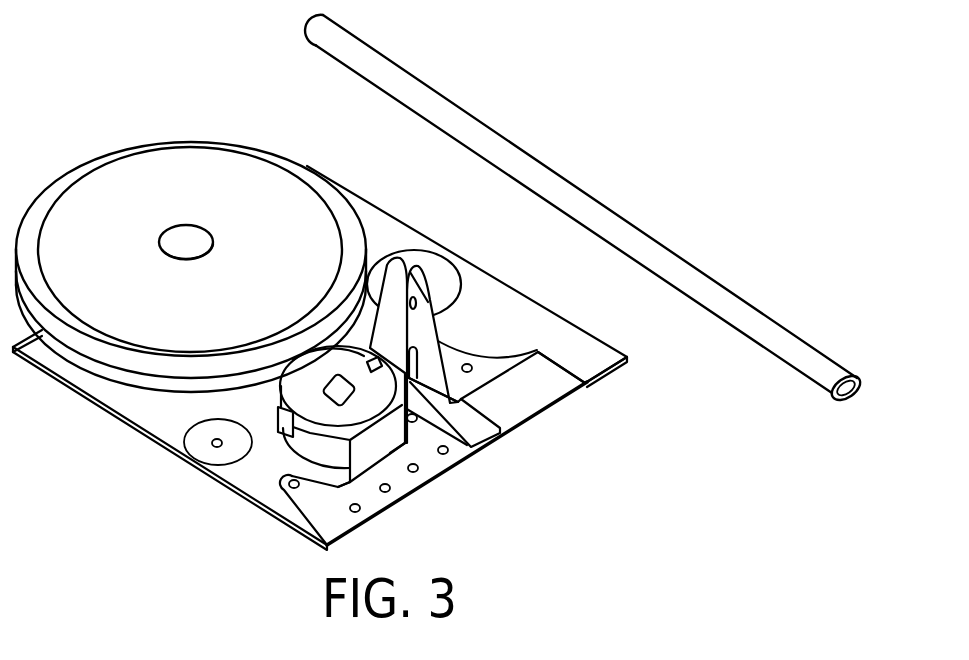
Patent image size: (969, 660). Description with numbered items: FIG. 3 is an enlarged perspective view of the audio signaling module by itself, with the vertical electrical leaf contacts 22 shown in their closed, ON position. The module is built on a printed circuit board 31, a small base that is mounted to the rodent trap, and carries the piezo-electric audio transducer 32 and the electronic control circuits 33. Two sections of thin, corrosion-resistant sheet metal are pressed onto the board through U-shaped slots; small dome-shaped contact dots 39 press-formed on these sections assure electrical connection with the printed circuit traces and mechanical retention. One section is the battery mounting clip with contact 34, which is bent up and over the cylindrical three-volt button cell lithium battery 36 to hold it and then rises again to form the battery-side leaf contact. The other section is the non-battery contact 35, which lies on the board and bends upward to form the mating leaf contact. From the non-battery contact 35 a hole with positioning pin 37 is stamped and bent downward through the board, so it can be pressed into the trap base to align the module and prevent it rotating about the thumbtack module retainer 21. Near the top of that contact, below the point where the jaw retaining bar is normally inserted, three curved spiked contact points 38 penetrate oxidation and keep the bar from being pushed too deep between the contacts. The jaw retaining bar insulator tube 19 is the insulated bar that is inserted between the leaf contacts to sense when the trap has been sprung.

The jaw retaining bar insulator tube 19 is at (798, 352).
The thumbtack module retainer 21 is at (207, 447).
The electrical leaf contacts 22 is at (395, 282).
The printed circuit board 31 is at (88, 402).
The piezo-electric audio transducer 32 is at (190, 178).
The electronic control circuits 33 is at (462, 278).
The battery mounting clip with contact 34 is at (322, 513).
The non-battery contact 35 is at (578, 370).
The 3V button cell lithium battery 36 is at (300, 445).
The hole with positioning pin 37 is at (480, 447).
The spiked contact points 38 is at (413, 265).
The contact dots 39 is at (413, 466).